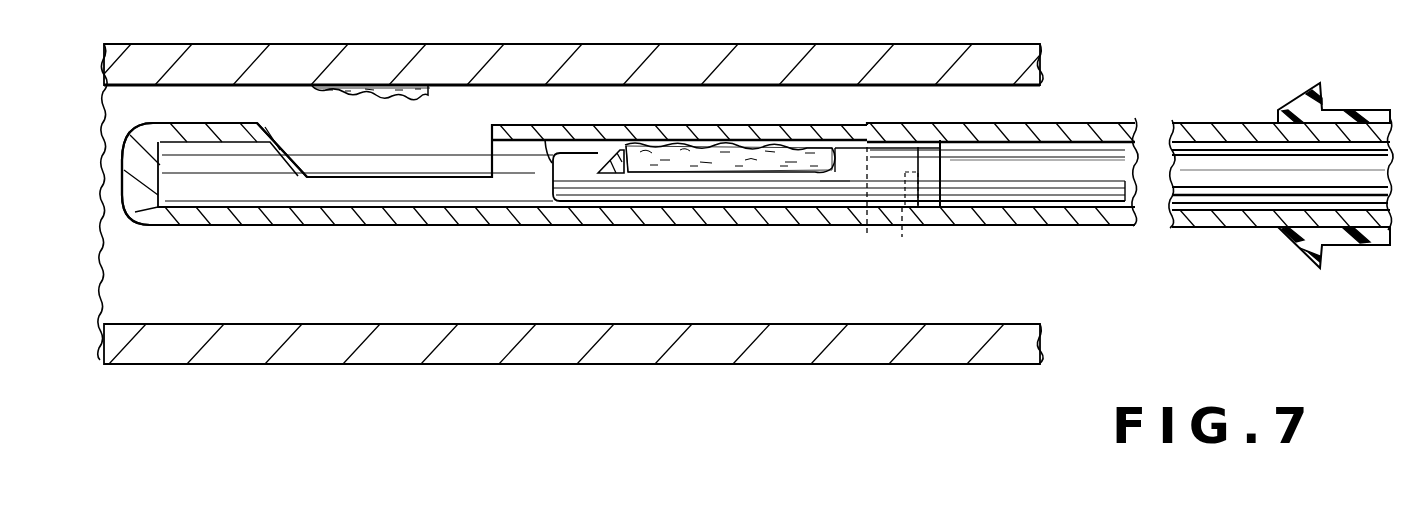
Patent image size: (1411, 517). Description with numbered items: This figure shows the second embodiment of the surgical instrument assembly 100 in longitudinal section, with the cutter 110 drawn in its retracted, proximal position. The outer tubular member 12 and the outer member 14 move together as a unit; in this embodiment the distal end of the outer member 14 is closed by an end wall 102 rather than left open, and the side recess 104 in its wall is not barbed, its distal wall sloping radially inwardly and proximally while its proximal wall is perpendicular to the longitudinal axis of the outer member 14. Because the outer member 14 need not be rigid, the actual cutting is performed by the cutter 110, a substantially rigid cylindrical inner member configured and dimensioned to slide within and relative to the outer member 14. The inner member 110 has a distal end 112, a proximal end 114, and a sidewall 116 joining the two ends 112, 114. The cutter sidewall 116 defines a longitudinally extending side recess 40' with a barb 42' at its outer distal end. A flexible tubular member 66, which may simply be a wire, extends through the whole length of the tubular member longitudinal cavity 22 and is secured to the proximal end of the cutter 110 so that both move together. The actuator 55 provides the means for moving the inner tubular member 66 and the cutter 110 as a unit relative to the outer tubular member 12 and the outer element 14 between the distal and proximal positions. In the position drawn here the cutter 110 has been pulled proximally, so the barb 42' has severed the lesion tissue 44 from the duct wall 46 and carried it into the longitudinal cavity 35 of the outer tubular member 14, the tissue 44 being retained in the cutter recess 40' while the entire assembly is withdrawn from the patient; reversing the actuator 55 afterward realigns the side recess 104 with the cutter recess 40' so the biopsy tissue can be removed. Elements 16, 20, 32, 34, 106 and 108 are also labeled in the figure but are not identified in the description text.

The outer tubular member 12 is at (1111, 120).
The outer member 14 is at (457, 228).
The outer tube 16 is at (898, 123).
The tube bottom wall 20 is at (1077, 226).
The tubular member longitudinal cavity 22 is at (1127, 205).
The collar end 32 is at (947, 178).
The bottom wall 34 is at (762, 218).
The longitudinal cavity of the outer tubular member 35 is at (523, 185).
The side recess of cutter 40' is at (729, 133).
The barb 42' is at (594, 134).
The tissue 44 is at (312, 96).
The duct wall 46 is at (606, 44).
The actuator 55 is at (1368, 104).
The flexible tubular member 66 is at (1048, 165).
The surgical instrument assembly 100 is at (801, 112).
The end wall 102 is at (125, 178).
The side recess 104 is at (413, 137).
The tapered shoulder 106 is at (292, 157).
The inner tube 108 is at (492, 158).
The cutter 110 is at (635, 181).
The distal end 112 is at (545, 138).
The proximal end 114 is at (903, 240).
The sidewall 116 is at (824, 200).